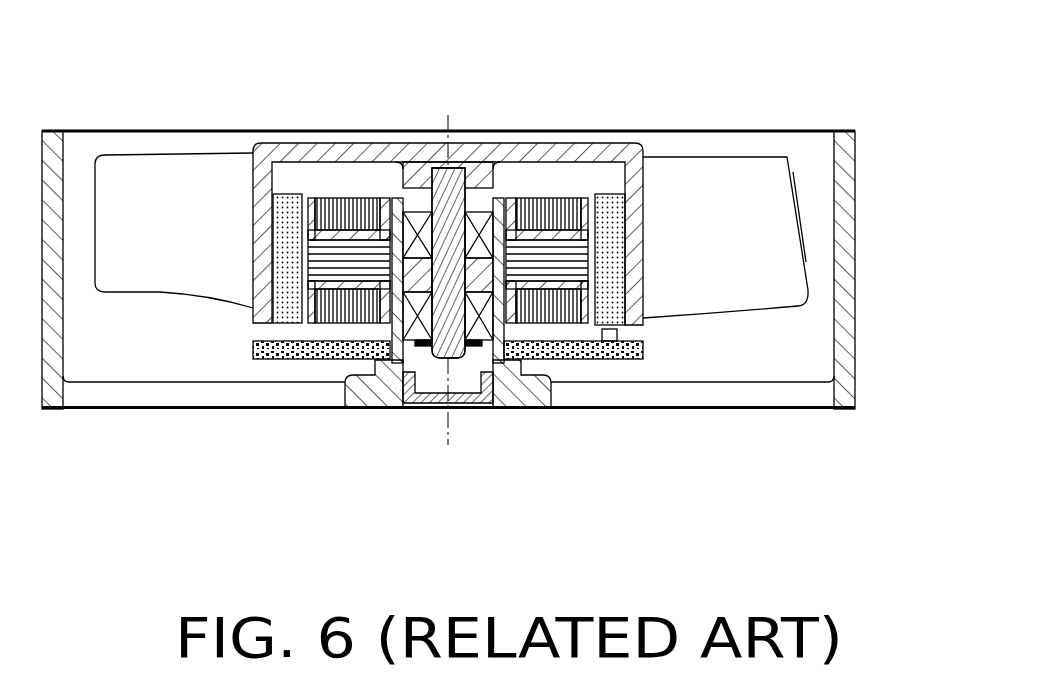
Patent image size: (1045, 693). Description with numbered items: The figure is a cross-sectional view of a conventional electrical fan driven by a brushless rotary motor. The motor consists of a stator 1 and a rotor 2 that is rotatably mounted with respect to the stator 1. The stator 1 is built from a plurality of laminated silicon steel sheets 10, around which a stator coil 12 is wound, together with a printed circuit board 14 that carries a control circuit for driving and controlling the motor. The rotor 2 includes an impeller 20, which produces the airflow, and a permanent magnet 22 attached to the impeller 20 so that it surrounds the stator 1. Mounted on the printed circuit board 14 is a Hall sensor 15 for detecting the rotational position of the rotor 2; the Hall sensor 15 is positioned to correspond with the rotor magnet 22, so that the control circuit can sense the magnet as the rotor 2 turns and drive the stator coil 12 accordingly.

The stator 1 is at (222, 466).
The rotor 2 is at (682, 57).
The laminated silicon steel sheets 10 is at (315, 265).
The stator coil 12 is at (328, 322).
The printed circuit board 14 is at (377, 361).
The Hall sensor 15 is at (617, 337).
The impeller 20 is at (693, 200).
The permanent magnet 22 is at (610, 196).